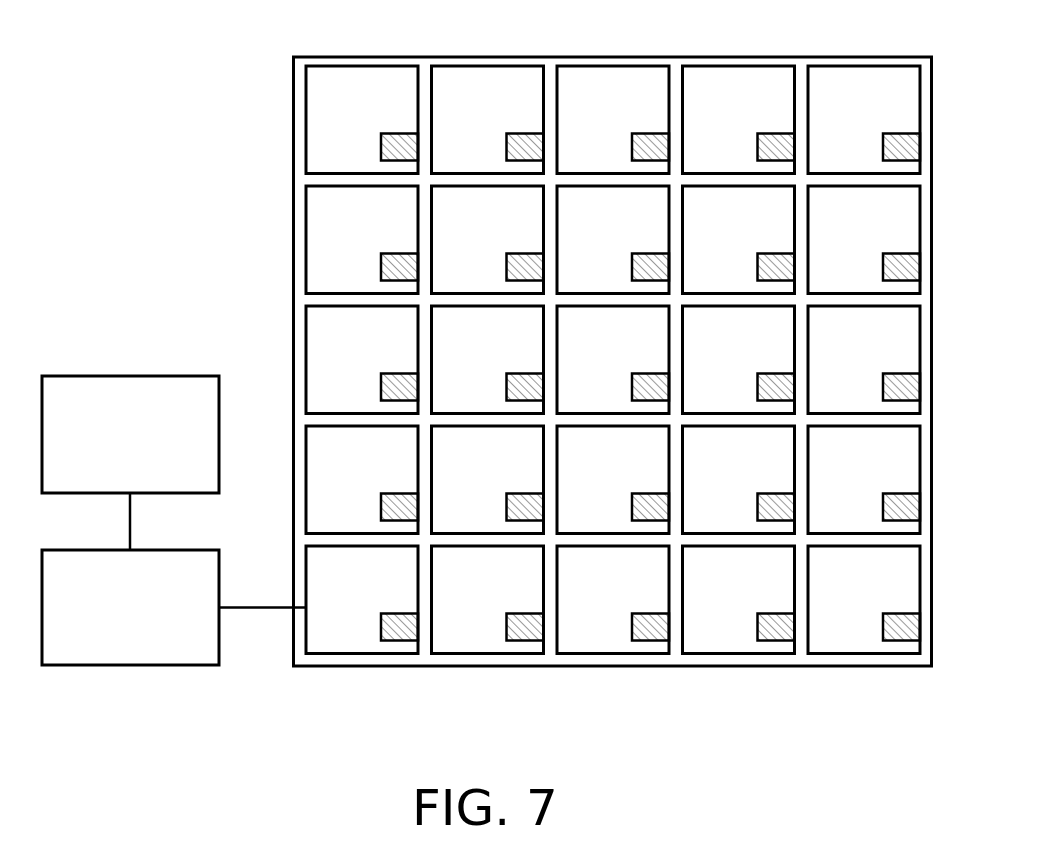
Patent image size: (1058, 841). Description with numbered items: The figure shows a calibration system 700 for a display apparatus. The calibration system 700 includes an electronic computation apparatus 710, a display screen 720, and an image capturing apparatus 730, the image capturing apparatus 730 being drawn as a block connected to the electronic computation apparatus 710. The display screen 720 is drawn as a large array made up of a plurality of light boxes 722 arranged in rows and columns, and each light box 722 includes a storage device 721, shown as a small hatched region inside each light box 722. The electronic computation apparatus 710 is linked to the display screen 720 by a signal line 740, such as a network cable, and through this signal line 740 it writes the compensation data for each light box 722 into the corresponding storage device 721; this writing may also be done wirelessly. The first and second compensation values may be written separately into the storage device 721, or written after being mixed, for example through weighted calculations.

The calibration system 700 is at (931, 736).
The electronic computation apparatus 710 is at (130, 665).
The display screen 720 is at (613, 368).
The storage device 721 is at (400, 635).
The light box 722 is at (330, 654).
The image capturing apparatus 730 is at (130, 376).
The signal line 740 is at (260, 610).